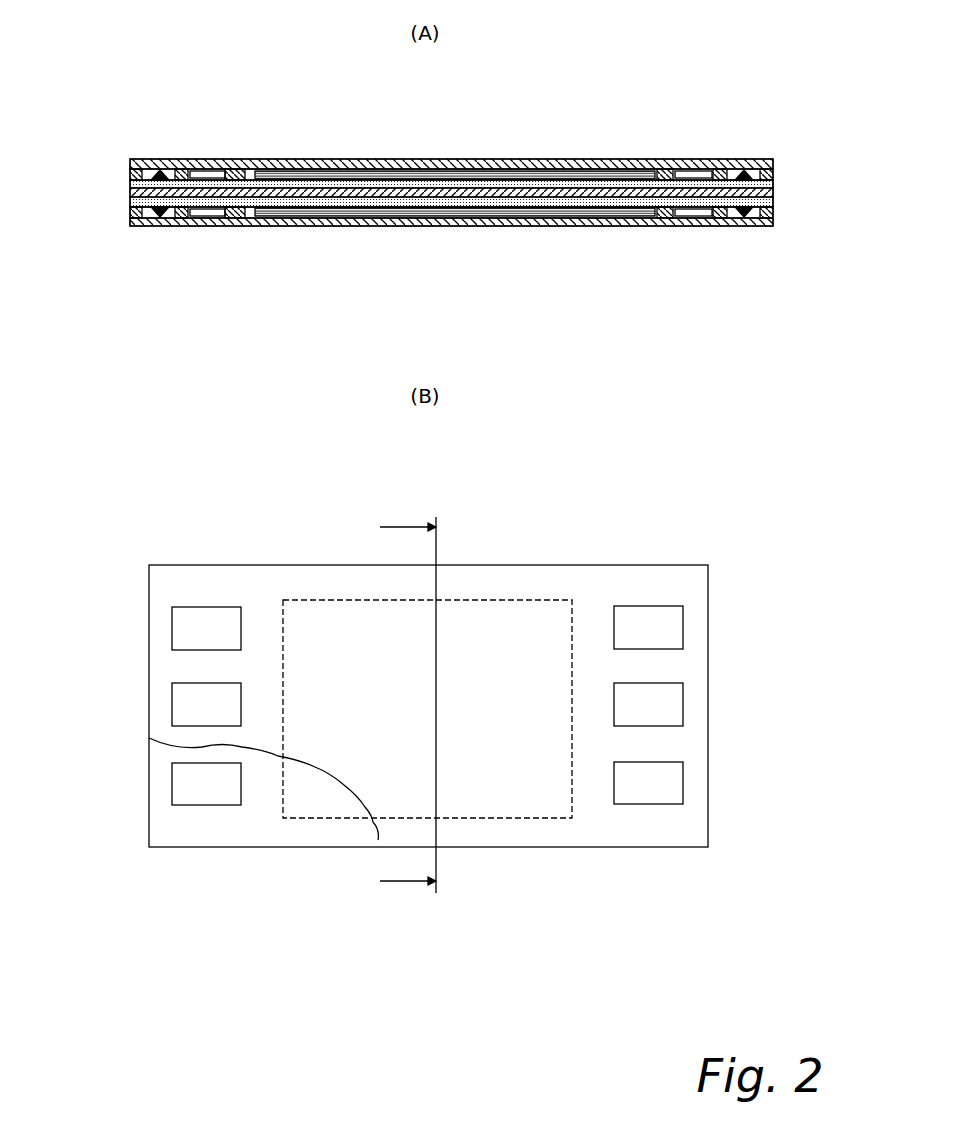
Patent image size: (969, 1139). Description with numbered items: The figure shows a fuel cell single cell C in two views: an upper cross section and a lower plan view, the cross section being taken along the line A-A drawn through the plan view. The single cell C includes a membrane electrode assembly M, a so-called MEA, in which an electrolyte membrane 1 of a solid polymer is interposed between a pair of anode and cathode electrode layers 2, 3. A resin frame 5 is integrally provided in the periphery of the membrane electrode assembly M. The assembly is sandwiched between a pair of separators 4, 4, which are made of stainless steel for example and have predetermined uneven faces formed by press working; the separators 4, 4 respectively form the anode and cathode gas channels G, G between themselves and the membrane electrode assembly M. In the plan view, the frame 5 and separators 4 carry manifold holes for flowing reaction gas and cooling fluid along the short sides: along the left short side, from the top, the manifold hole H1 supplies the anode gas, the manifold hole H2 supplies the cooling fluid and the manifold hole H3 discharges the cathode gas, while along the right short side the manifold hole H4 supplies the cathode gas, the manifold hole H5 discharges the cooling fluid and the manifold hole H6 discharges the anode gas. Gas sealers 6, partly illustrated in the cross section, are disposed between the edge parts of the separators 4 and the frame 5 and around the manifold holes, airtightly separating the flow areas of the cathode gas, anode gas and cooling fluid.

The electrolyte membrane 1 is at (483, 226).
The electrode layer 2 is at (424, 178).
The electrode layer 3 is at (422, 208).
The separator 4 is at (483, 158).
The resin frame 5 is at (707, 158).
The gas sealer 6 is at (162, 160).
The gas channel G is at (323, 171).
The single cell C is at (605, 148).
The membrane electrode assembly M is at (775, 185).
The line A- A is at (412, 715).
The manifold hole H1 is at (177, 621).
The manifold hole H2 is at (177, 706).
The manifold hole H3 is at (177, 781).
The manifold hole H4 is at (680, 628).
The manifold hole H5 is at (688, 713).
The manifold hole H6 is at (688, 790).